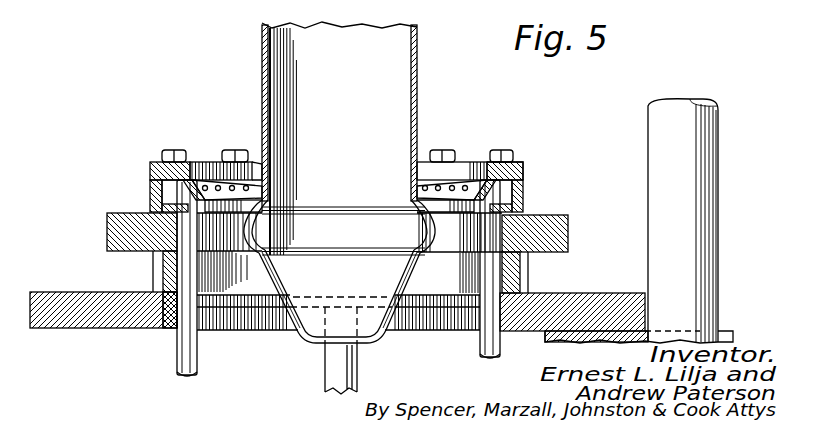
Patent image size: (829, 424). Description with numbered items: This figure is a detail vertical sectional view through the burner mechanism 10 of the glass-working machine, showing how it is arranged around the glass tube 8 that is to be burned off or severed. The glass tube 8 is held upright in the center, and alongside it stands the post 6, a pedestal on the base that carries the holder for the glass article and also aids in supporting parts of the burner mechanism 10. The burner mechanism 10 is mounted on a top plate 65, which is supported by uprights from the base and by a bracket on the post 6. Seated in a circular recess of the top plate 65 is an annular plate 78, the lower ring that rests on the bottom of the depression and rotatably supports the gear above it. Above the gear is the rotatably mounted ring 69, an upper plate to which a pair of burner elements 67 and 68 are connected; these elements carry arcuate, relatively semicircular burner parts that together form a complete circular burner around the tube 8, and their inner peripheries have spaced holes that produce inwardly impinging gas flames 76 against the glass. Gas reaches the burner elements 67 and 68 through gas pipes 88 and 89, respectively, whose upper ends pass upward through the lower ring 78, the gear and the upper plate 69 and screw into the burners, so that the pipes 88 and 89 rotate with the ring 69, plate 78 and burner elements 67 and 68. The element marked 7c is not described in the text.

The post 6 is at (720, 220).
The base plate bolt hole 7c is at (167, 327).
The glass tube 8 is at (262, 90).
The burner mechanism 10 is at (466, 156).
The top plate 65 is at (45, 292).
The burner element 67 is at (518, 158).
The burner element 68 is at (150, 162).
The ring 69 is at (568, 216).
The gas flames 76 is at (153, 280).
The annular plate 78 is at (163, 303).
The gas pipe 88 is at (480, 348).
The gas pipe 89 is at (197, 355).